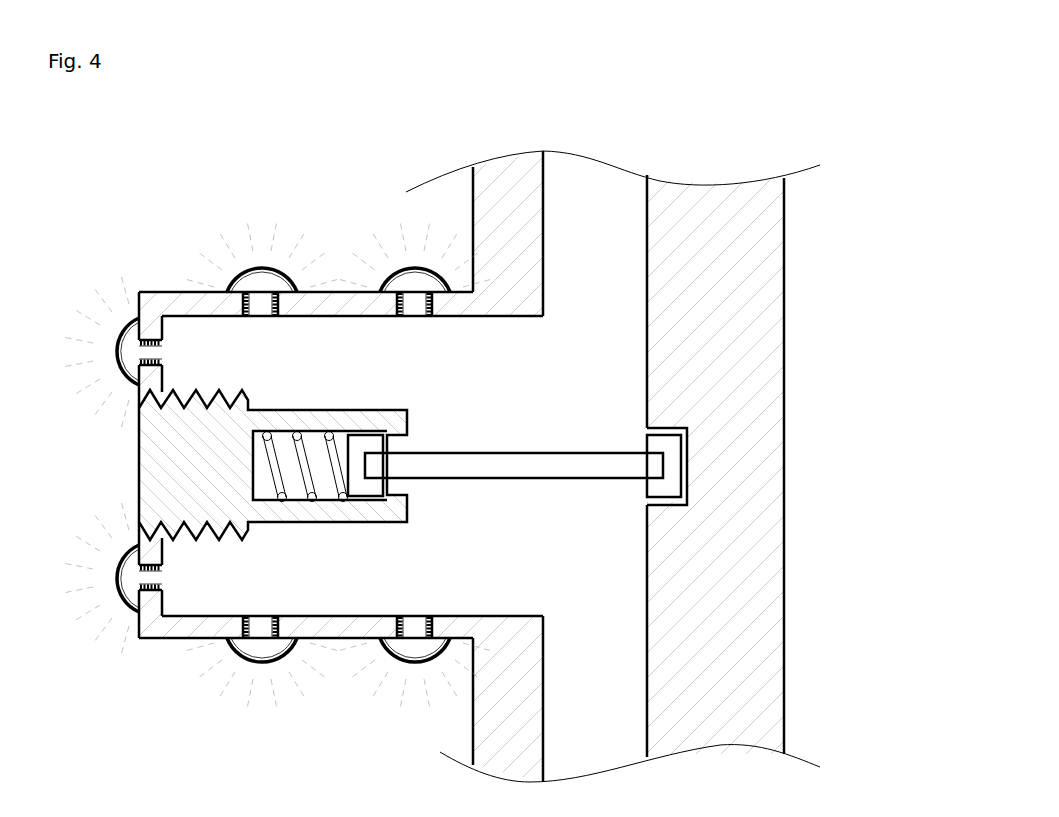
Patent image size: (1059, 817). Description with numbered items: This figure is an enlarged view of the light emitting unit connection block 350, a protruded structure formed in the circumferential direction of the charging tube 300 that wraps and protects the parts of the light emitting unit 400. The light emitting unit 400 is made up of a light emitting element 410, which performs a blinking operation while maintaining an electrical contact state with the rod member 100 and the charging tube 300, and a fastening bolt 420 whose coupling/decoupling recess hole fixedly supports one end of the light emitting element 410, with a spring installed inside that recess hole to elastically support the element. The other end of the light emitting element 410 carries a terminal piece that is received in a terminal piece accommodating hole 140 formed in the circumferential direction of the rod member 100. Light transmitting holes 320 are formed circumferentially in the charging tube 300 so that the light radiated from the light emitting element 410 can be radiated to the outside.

The rod member 100 is at (756, 235).
The terminal piece accommodating hole 140 is at (688, 427).
The charging tube 300 is at (500, 178).
The light transmitting hole 320 is at (383, 307).
The light emitting unit connection block 350 is at (186, 293).
The light emitting unit 400 is at (401, 452).
The light emitting element 410 is at (510, 470).
The fastening bolt 420 is at (248, 525).